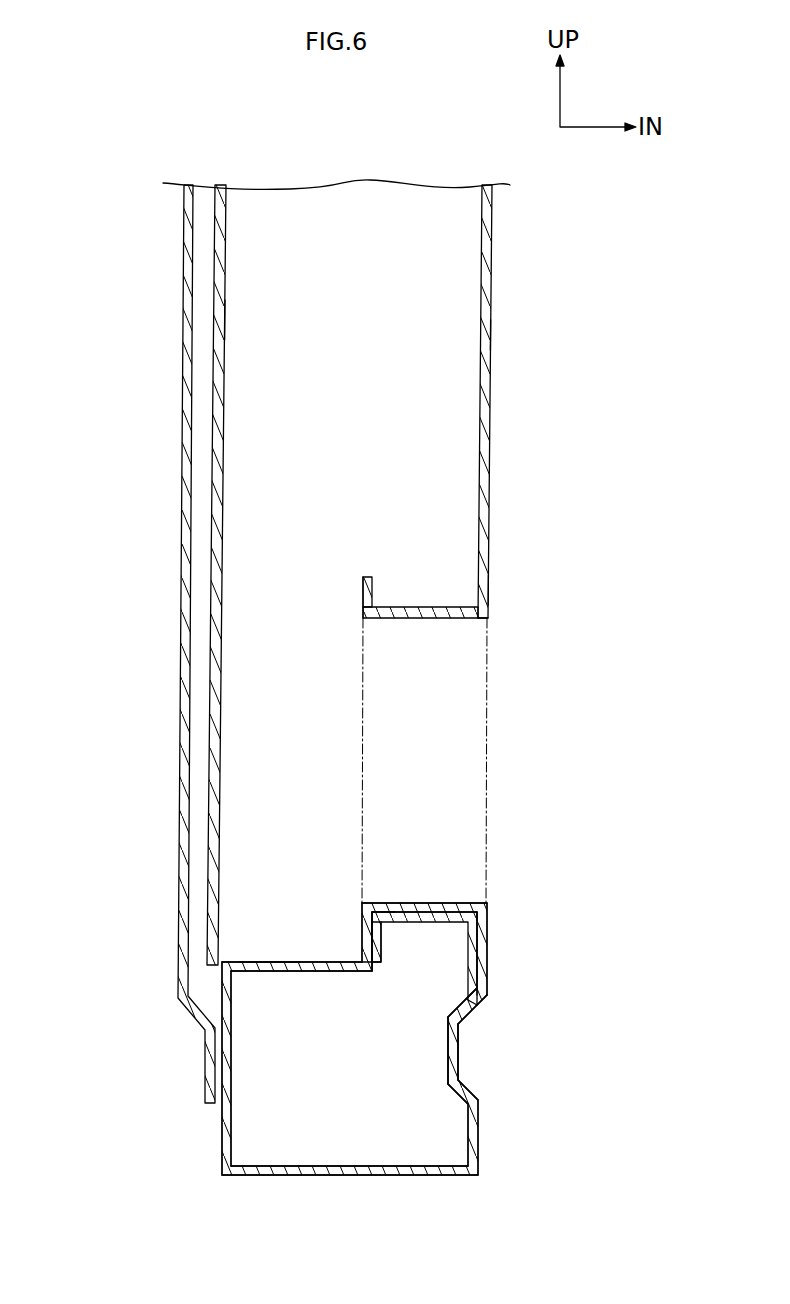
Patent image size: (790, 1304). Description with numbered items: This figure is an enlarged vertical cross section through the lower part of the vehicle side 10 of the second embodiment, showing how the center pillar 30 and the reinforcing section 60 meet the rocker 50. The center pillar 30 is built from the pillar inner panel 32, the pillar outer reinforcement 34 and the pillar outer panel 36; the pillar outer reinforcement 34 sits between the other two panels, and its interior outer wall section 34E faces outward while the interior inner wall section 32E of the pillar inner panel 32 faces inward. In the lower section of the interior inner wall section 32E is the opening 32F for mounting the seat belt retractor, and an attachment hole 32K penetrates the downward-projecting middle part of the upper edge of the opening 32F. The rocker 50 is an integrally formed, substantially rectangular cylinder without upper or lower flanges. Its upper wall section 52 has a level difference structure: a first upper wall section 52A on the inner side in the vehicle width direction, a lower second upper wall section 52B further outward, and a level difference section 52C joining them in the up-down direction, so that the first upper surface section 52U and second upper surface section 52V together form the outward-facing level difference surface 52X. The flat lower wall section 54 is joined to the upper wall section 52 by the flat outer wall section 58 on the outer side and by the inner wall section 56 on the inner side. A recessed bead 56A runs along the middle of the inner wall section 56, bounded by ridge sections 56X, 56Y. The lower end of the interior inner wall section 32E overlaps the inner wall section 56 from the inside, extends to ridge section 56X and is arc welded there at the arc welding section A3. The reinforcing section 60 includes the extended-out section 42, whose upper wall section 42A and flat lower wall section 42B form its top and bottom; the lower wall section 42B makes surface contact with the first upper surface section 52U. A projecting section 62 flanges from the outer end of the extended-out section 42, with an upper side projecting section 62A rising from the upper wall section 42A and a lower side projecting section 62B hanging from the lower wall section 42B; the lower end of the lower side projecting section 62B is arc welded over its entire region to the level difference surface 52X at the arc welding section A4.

The vehicle side 10 is at (117, 178).
The center pillar 30 is at (588, 368).
The pillar inner panel 32 is at (505, 268).
The interior inner wall section 32E is at (493, 335).
The attachment hole 32K is at (490, 592).
The opening 32F is at (492, 622).
The pillar outer reinforcement 34 is at (237, 256).
The interior outer wall section 34E is at (229, 318).
The pillar outer panel 36 is at (182, 256).
The extended-out section 42 is at (436, 601).
The upper wall section 42A is at (408, 620).
The lower wall section 42B is at (430, 903).
The rocker 50 is at (277, 888).
The upper wall section 52 is at (407, 1058).
The first upper wall section 52A is at (437, 922).
The second upper wall section 52B is at (290, 975).
The level difference section 52C is at (382, 939).
The first upper surface section 52U is at (488, 903).
The second upper surface section 52V is at (265, 962).
The level difference surface 52X is at (361, 932).
The lower wall section 54 is at (345, 1176).
The inner wall section 56 is at (487, 1123).
The recessed bead 56A is at (462, 1050).
The ridge section 56X is at (487, 1005).
The ridge section 56Y is at (470, 1095).
The outer wall section 58 is at (232, 1082).
The reinforcing section 60 is at (398, 578).
The projecting section 62 is at (360, 591).
The upper side projecting section 62A is at (362, 603).
The lower side projecting section 62B is at (364, 932).
The arc welding section A3 is at (485, 1021).
The arc welding section A4 is at (373, 1040).